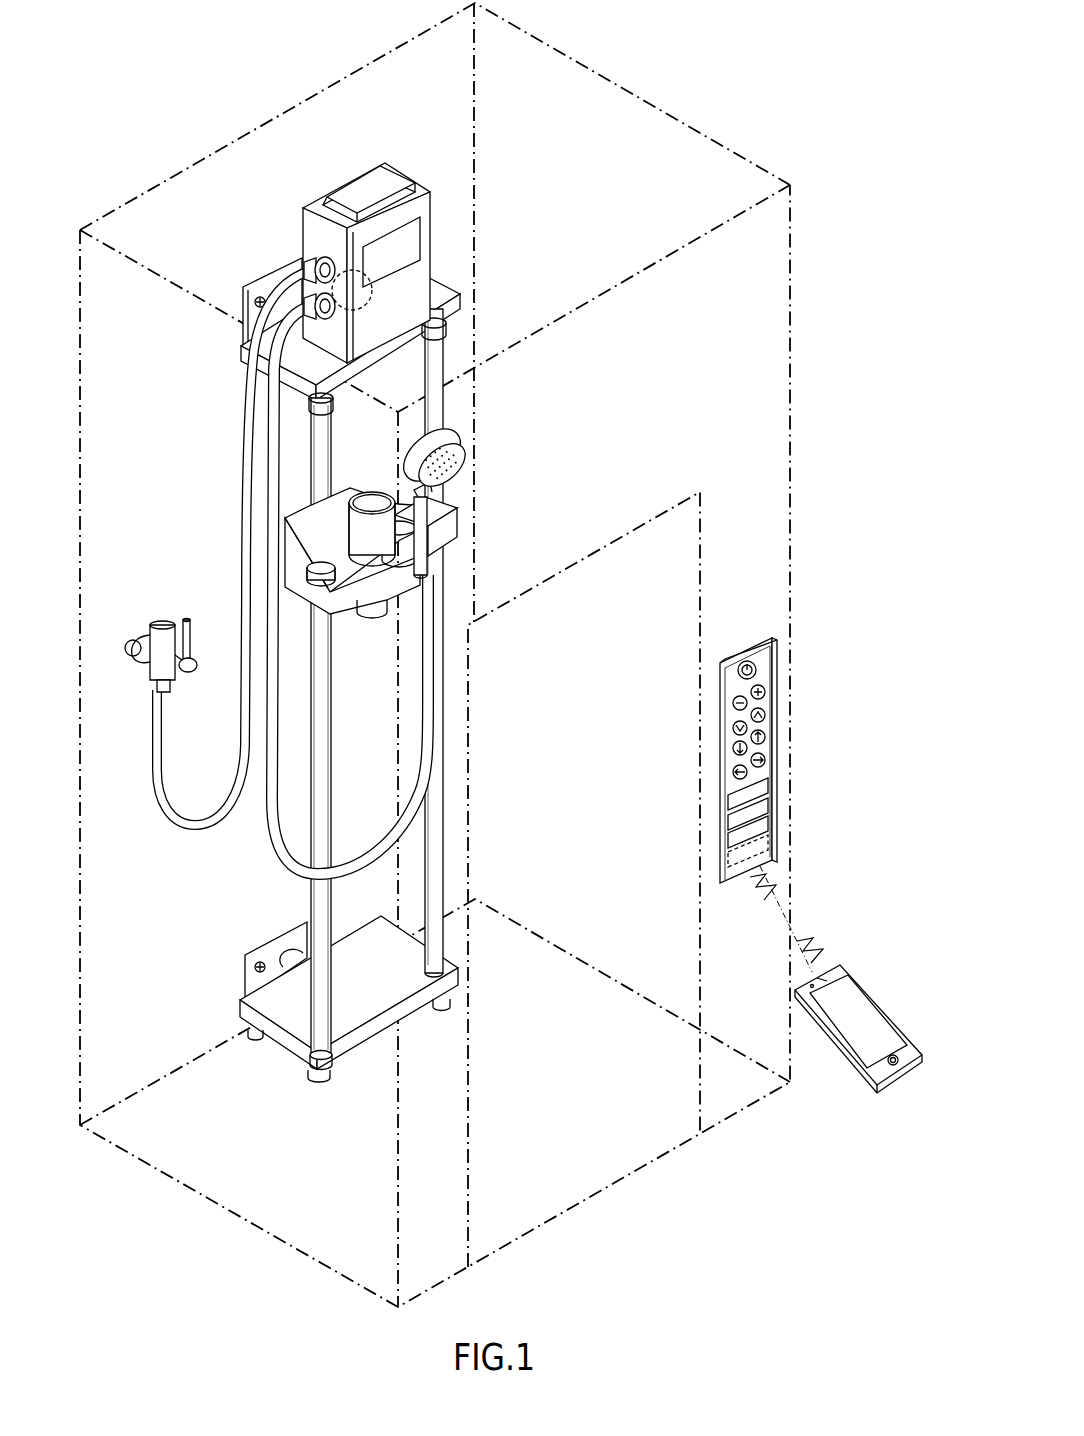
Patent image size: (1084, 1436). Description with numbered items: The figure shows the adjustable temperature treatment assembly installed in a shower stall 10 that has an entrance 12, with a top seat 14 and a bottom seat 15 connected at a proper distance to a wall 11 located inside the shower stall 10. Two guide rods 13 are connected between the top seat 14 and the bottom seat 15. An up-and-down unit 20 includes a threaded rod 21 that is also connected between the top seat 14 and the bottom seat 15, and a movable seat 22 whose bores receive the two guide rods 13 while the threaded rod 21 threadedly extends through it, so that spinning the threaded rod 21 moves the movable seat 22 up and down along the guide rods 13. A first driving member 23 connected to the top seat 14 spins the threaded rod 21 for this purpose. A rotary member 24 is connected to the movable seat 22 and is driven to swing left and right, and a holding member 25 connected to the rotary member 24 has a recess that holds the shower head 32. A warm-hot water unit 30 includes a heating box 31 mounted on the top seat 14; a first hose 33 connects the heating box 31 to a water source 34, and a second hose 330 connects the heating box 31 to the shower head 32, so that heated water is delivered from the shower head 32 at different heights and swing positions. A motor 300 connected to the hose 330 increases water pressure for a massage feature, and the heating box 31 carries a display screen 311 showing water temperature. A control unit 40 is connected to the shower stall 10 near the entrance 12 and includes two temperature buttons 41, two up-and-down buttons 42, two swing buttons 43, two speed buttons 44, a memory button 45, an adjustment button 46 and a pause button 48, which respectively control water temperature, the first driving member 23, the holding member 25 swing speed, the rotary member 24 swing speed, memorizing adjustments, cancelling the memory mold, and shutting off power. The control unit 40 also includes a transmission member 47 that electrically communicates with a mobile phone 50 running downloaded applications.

The shower stall 10 is at (716, 130).
The wall 11 is at (455, 90).
The entrance 12 is at (640, 527).
The guide rod 13 is at (437, 358).
The top seat 14 is at (442, 300).
The bottom seat 15 is at (287, 1040).
The up-and-down unit 20 is at (291, 716).
The threaded rod 21 is at (308, 425).
The movable seat 22 is at (308, 600).
The first driving member 23 is at (305, 268).
The rotary member 24 is at (377, 497).
The holding member 25 is at (259, 535).
The warm-hot water unit 30 is at (359, 214).
The heating box 31 is at (355, 190).
The motor 300 is at (375, 270).
The display screen 311 is at (418, 234).
The shower head 32 is at (462, 435).
The first hose 33 is at (250, 382).
The second hose 330 is at (268, 830).
The water source 34 is at (190, 641).
The control unit 40 is at (792, 738).
The temperature button 41 is at (755, 680).
The up-and-down button 42 is at (764, 706).
The swing button 43 is at (766, 740).
The speed button 44 is at (768, 762).
The memory button 45 is at (768, 802).
The adjustment button 46 is at (772, 828).
The transmission member 47 is at (775, 852).
The pause button 48 is at (763, 780).
The mobile phone 50 is at (830, 1075).